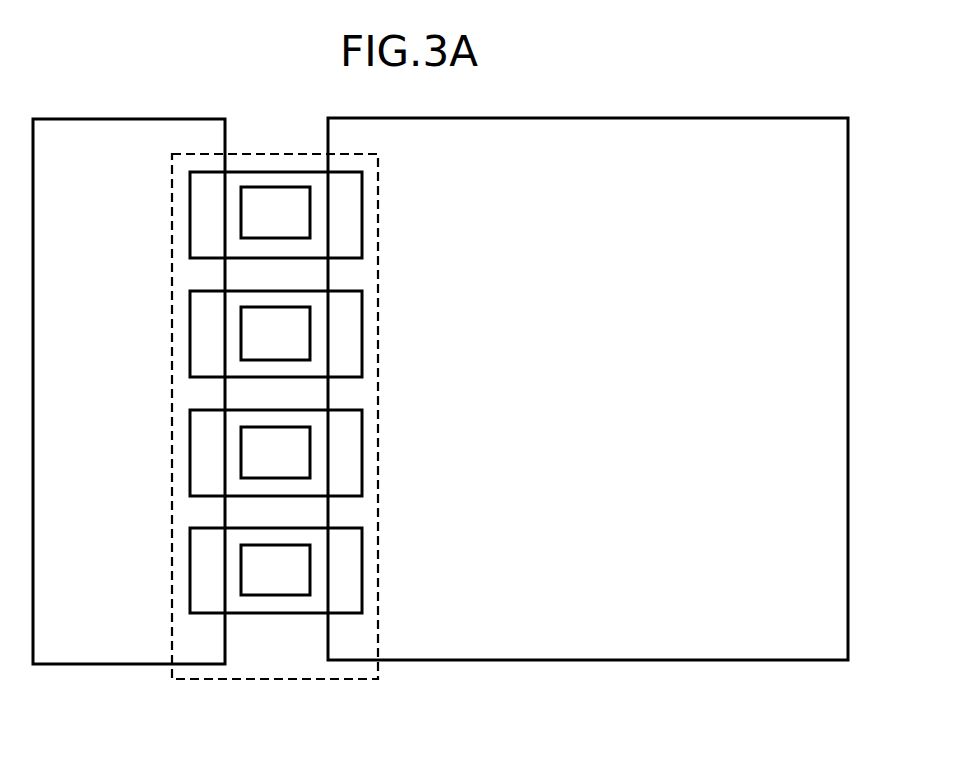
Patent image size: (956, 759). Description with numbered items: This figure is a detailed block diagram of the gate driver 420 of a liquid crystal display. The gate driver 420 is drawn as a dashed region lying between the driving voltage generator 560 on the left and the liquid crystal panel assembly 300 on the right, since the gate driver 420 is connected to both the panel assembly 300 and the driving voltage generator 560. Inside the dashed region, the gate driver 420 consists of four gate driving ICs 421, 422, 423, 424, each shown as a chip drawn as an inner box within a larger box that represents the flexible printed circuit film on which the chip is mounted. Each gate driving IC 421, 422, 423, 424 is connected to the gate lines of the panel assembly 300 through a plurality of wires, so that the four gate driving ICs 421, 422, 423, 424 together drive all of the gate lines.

The driving voltage generator 560 is at (128, 118).
The liquid crystal panel assembly 300 is at (434, 662).
The gate driver 420 is at (276, 681).
The gate driving IC 421 is at (241, 212).
The gate driving IC 422 is at (241, 332).
The gate driving IC 423 is at (241, 452).
The gate driving IC 424 is at (241, 569).